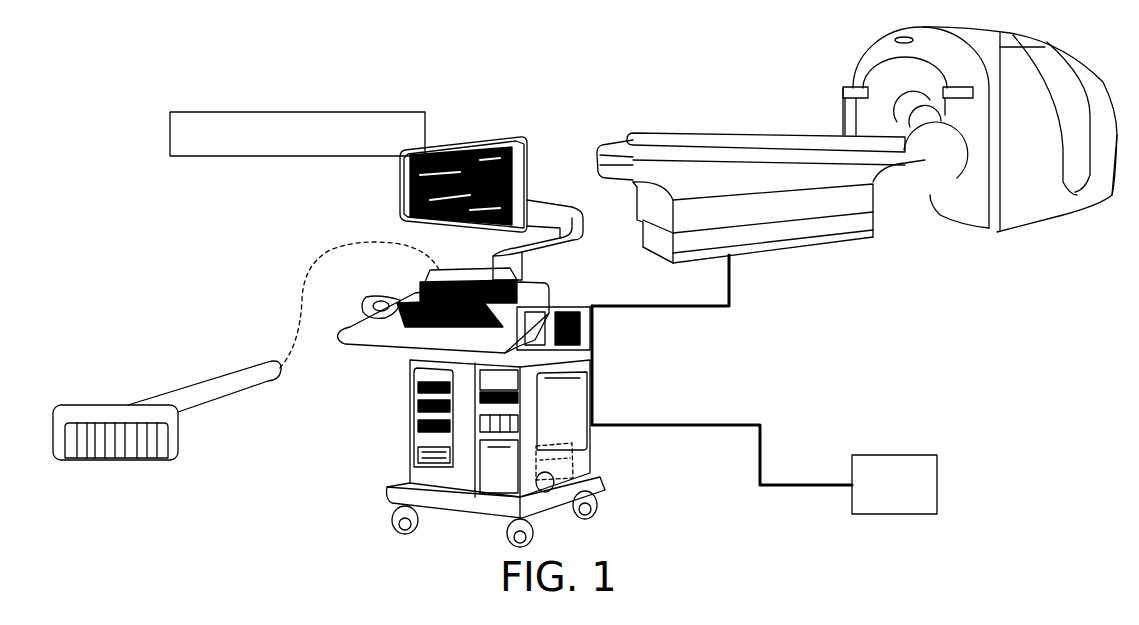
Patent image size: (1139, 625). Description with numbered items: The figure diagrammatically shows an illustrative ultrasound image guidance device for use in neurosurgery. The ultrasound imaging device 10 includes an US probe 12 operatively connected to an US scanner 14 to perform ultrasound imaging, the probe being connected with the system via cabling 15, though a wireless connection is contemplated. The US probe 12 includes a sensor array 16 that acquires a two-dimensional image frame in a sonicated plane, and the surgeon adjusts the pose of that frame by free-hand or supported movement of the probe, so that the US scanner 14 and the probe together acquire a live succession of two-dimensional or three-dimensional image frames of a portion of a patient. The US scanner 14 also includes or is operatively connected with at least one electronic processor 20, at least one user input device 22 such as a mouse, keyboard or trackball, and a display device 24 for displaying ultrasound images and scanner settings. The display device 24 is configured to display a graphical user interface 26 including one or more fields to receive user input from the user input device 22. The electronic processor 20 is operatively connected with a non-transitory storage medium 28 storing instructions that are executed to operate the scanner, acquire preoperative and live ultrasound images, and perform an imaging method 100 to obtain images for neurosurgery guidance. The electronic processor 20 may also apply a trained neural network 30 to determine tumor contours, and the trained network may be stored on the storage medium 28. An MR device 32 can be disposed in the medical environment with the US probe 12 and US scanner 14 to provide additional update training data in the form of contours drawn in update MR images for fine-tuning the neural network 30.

The ultrasound imaging device 10 is at (168, 90).
The imaging method 100 is at (380, 110).
The US probe 12 is at (103, 405).
The US scanner 14 is at (608, 378).
The cabling 15 is at (200, 382).
The sensor array 16 is at (121, 461).
The electronic processor 20 is at (575, 398).
The user input device 22 is at (378, 300).
The display device 24 is at (535, 162).
The graphical user interface 26 is at (400, 190).
The non-transitory storage medium 28 is at (590, 458).
The trained neural network 30 is at (940, 485).
The MR device 32 is at (852, 63).